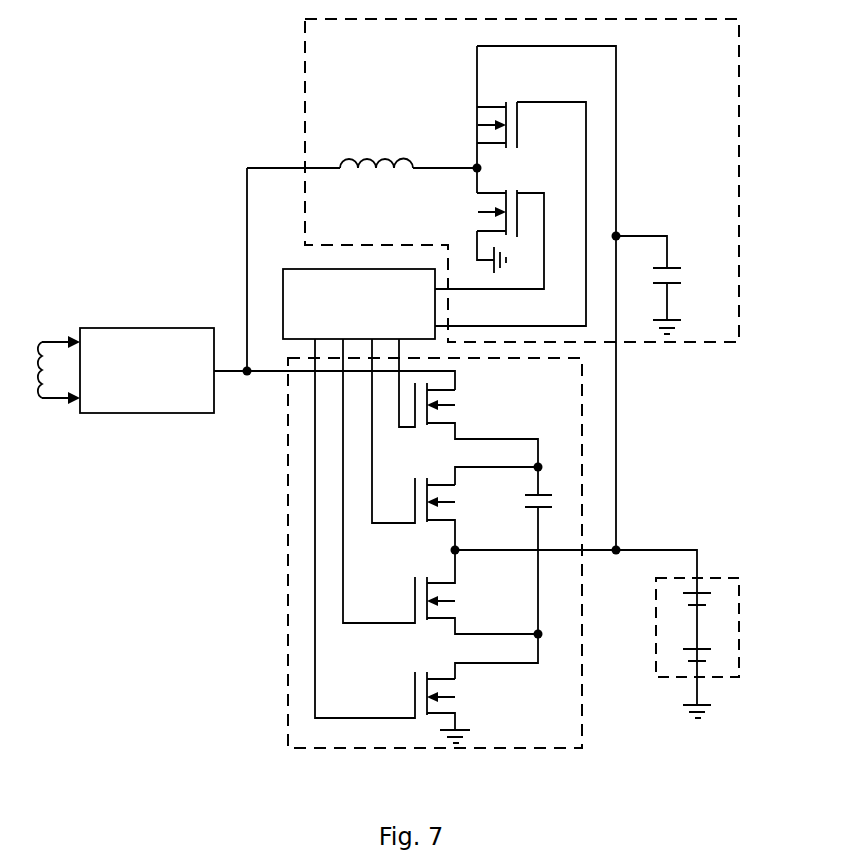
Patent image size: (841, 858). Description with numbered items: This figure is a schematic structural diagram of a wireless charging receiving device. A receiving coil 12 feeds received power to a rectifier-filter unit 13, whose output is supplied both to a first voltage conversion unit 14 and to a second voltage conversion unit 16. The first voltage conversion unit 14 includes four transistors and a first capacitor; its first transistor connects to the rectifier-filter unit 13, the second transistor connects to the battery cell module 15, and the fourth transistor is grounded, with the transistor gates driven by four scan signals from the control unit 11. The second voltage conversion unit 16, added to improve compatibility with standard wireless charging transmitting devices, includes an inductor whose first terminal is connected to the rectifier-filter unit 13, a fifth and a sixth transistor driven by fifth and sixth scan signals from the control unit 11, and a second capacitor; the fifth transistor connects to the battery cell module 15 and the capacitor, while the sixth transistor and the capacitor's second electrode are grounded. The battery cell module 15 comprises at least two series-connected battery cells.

The control unit 11 is at (359, 304).
The receiving coil 12 is at (56, 359).
The rectifier-filter unit 13 is at (147, 370).
The first voltage conversion unit 14 is at (288, 562).
The battery cell module 15 is at (739, 633).
The second voltage conversion unit 16 is at (305, 73).